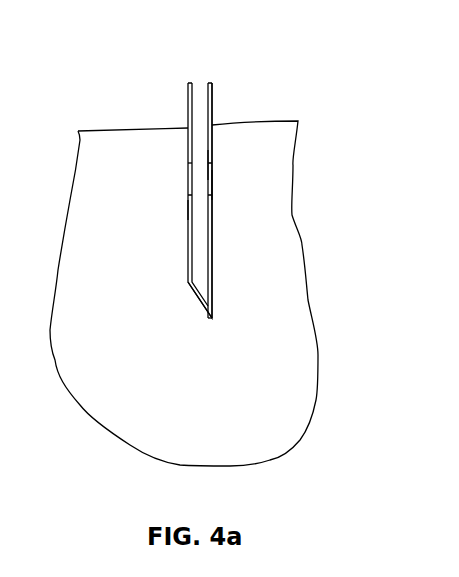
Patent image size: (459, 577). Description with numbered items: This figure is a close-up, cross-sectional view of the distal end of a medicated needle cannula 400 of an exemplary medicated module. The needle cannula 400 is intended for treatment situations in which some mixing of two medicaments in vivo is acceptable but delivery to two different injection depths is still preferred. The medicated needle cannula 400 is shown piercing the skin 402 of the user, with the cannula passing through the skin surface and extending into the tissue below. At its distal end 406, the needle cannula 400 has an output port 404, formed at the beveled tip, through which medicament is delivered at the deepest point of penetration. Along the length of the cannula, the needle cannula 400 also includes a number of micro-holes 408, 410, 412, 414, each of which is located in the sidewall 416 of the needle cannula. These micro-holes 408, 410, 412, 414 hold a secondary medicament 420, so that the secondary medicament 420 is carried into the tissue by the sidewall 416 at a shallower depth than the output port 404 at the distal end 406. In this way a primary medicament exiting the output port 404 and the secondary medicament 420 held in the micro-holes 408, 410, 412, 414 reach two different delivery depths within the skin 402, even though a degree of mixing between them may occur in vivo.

The medicated needle cannula 400 is at (185, 100).
The skin 402 is at (98, 126).
The output port 404 is at (191, 291).
The distal end 406 is at (213, 324).
The micro-hole 408 is at (216, 167).
The micro-hole 410 is at (229, 184).
The micro-hole 412 is at (188, 160).
The micro-hole 414 is at (180, 206).
The sidewall 416 is at (217, 100).
The secondary medicament 420 is at (187, 165).